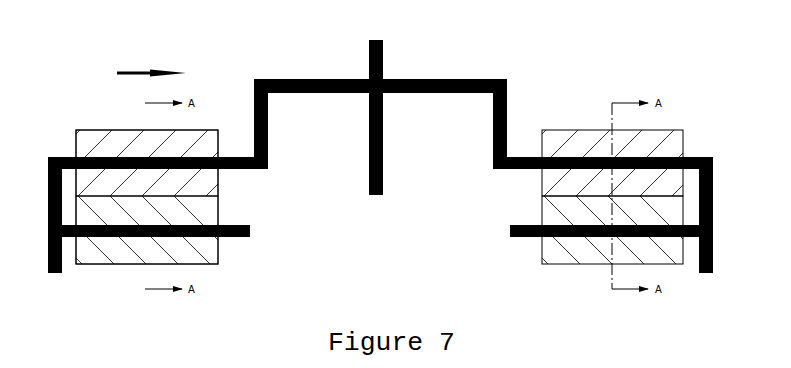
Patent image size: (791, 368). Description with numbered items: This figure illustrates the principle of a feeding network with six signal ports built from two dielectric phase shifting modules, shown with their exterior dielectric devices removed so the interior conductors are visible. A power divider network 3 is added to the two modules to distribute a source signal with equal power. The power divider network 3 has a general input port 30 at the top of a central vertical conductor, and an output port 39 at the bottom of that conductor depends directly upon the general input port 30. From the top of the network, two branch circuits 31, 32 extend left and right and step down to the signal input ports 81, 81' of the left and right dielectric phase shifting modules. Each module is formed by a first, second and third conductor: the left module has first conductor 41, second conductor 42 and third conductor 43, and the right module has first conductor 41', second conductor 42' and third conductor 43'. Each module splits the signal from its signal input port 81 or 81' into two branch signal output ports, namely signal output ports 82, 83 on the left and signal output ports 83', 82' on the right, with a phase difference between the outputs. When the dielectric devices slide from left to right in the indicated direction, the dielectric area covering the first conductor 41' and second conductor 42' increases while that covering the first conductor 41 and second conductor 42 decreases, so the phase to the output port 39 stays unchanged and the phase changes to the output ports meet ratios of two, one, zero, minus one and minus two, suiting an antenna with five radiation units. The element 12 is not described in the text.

The power divider network 3 is at (373, 120).
The general input port 30 is at (384, 48).
The branch circuit 31 is at (312, 79).
The branch circuit 32 is at (480, 79).
The output port 39 is at (383, 150).
The magnetic core 12 is at (147, 197).
The first conductor 41 is at (143, 138).
The second conductor 42 is at (140, 250).
The third conductor 43 is at (58, 177).
The first conductor 41' is at (609, 142).
The second conductor 42' is at (594, 254).
The third conductor 43' is at (690, 177).
The signal input port 81 is at (172, 173).
The signal output port 82 is at (164, 230).
The signal output port 83 is at (62, 228).
The signal input port 81' is at (588, 173).
The signal output port 82' is at (593, 231).
The signal output port 83' is at (695, 228).